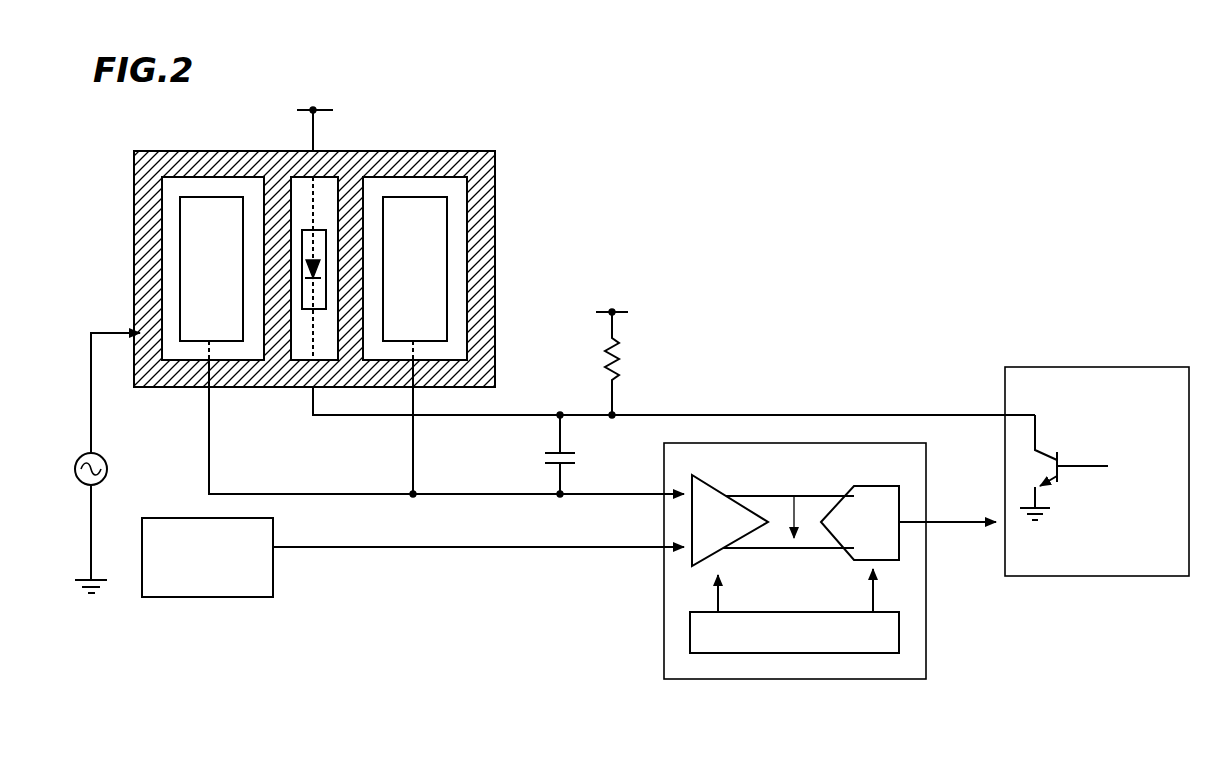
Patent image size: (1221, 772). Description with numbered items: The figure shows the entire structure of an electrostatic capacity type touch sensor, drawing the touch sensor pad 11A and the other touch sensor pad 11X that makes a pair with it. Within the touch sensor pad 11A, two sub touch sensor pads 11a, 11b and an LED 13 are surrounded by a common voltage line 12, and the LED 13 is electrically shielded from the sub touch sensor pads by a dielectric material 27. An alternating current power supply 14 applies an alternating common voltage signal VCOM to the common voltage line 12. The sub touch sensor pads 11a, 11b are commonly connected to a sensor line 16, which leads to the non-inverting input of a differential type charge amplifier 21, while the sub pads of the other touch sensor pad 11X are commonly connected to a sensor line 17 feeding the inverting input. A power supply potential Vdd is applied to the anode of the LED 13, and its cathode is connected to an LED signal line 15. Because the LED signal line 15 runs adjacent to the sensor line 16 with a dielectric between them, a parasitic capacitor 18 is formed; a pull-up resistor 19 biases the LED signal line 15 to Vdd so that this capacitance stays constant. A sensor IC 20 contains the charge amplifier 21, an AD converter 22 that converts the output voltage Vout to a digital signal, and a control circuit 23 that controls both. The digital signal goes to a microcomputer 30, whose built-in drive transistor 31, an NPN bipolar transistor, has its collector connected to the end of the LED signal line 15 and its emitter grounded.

The touch sensor pad 11A is at (423, 150).
The sub touch sensor pad 11a is at (192, 252).
The sub touch sensor pad 11b is at (432, 253).
The other touch sensor pad 11X is at (246, 598).
The common voltage line 12 is at (486, 189).
The LED 13 is at (310, 250).
The alternating current power supply 14 is at (112, 470).
The LED signal line 15 is at (469, 420).
The sensor line 16 is at (442, 500).
The sensor line 17 is at (357, 553).
The parasitic capacitor 18 is at (580, 461).
The pull-up resistor 19 is at (627, 362).
The sensor IC 20 is at (733, 688).
The differential type charge amplifier 21 is at (720, 480).
The AD converter 22 is at (877, 485).
The control circuit 23 is at (830, 656).
The dielectric material 27 is at (173, 213).
The microcomputer 30 is at (1112, 365).
The drive transistor 31 is at (1062, 440).